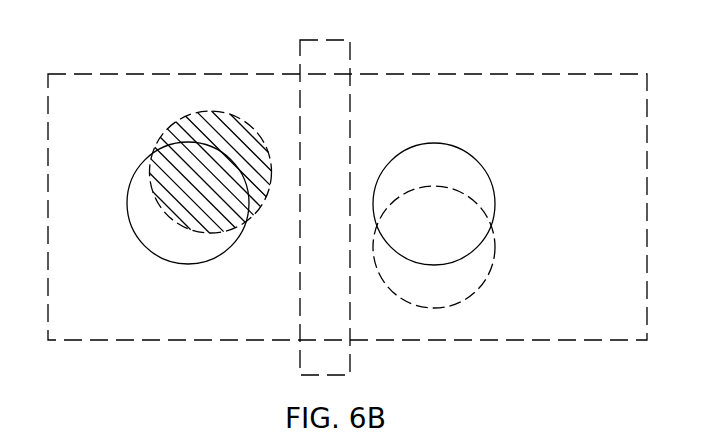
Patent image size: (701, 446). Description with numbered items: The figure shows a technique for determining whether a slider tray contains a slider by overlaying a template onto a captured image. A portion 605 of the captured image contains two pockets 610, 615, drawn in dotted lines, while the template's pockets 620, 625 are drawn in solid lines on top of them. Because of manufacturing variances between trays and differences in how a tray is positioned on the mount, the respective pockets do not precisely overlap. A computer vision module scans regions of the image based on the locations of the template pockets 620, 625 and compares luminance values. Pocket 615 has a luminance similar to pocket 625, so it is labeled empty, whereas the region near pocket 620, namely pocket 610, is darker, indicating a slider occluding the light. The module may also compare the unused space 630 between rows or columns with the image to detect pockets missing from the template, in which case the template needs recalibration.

The portion of the captured image 605 is at (539, 74).
The pocket 610 is at (183, 120).
The pocket 615 is at (493, 257).
The pocket of the template 620 is at (183, 265).
The pocket of the template 625 is at (422, 143).
The unused space 630 is at (350, 52).